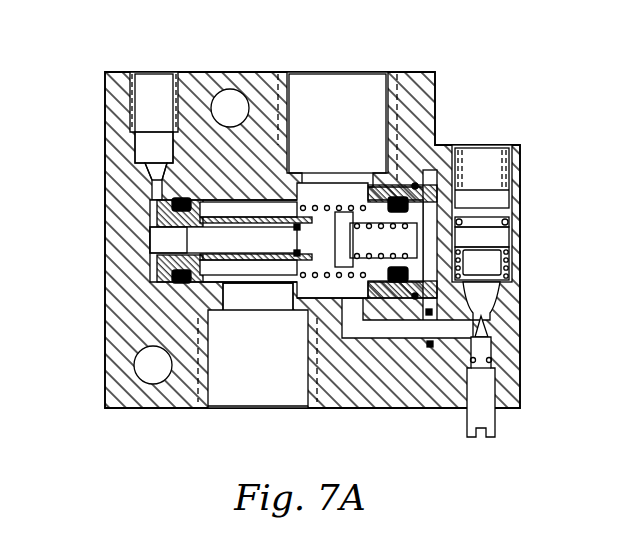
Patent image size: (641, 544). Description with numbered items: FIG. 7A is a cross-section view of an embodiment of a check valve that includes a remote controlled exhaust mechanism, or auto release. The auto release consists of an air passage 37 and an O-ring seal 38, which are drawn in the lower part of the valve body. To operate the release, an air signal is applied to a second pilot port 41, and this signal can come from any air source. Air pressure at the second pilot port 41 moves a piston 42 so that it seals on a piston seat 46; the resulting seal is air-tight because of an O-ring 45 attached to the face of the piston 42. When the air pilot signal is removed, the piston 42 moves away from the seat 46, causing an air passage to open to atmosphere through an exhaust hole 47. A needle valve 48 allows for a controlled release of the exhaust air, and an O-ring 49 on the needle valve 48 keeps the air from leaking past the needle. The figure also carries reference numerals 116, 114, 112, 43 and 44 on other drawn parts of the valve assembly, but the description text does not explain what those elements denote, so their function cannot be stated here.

The pressure relief cartridge 116 is at (160, 73).
The inlet port 114 is at (335, 72).
The outlet port 112 is at (232, 410).
The second pilot port 41 is at (480, 145).
The piston 42 is at (492, 207).
The seal ring 43 is at (507, 222).
The solenoid coil housing 44 is at (510, 258).
The exhaust hole 47 is at (512, 276).
The O-ring 45 is at (489, 322).
The piston seat 46 is at (497, 328).
The O-ring 49 is at (492, 361).
The needle valve 48 is at (496, 426).
The air passage 37 is at (382, 333).
The O-ring seal 38 is at (430, 347).